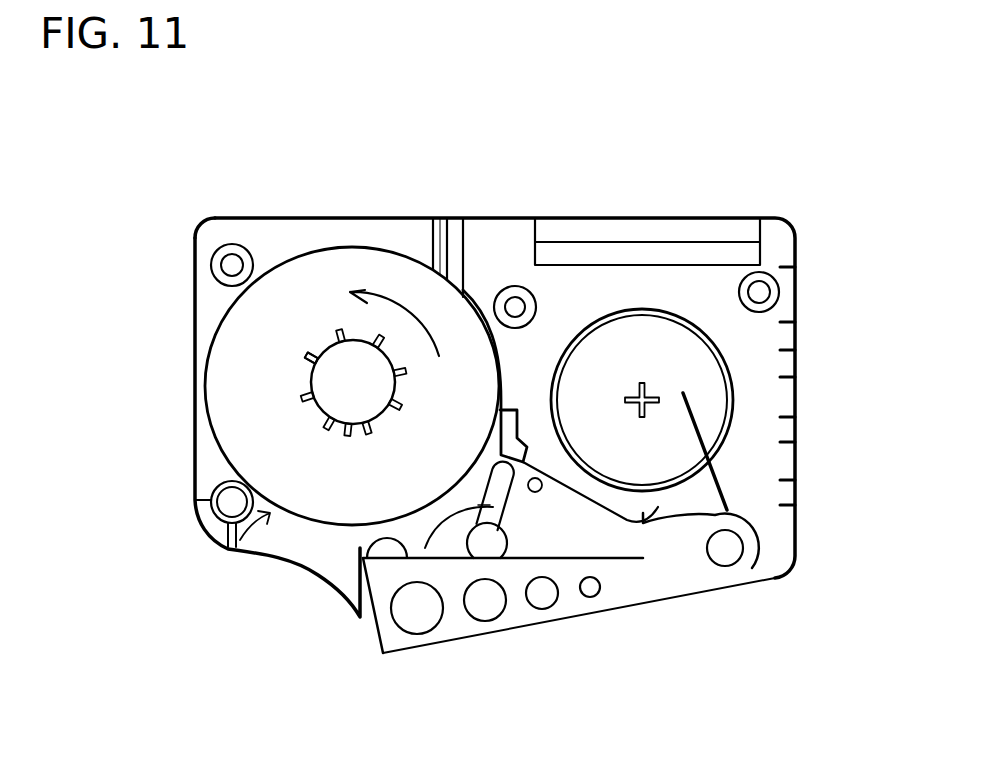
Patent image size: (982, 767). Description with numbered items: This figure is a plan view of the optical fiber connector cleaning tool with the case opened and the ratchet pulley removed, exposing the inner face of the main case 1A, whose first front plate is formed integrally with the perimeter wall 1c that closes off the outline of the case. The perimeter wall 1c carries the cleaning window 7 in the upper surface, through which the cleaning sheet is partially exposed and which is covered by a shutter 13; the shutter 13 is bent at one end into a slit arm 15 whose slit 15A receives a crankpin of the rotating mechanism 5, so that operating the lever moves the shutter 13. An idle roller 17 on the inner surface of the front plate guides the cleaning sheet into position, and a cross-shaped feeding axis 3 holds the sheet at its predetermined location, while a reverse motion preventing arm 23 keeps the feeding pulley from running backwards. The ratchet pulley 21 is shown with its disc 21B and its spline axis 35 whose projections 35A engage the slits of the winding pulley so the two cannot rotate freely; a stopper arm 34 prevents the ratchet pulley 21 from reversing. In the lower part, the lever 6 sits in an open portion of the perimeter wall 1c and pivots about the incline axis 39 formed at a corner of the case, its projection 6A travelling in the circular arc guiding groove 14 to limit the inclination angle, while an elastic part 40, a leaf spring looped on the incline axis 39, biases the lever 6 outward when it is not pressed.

The main case 1A is at (331, 190).
The perimeter wall 1c is at (277, 217).
The feeding axis 3 is at (650, 407).
The rotating mechanism 5 is at (485, 268).
The lever 6 is at (573, 600).
The projection 6A is at (477, 543).
The cleaning window 7 is at (735, 199).
The shutter 13 is at (650, 230).
The guiding groove 14 is at (450, 516).
The slit arm 15 is at (428, 243).
The slit 15A is at (440, 232).
The idle roller 17 is at (225, 262).
The ratchet pulley 21 is at (220, 548).
The disc 21B is at (237, 407).
The reverse motion preventing arm 23 is at (641, 525).
The stopper arm 34 is at (500, 297).
The spline axis 35 is at (348, 432).
The projections 35A is at (303, 352).
The incline axis 39 is at (730, 553).
The elastic part 40 is at (692, 410).